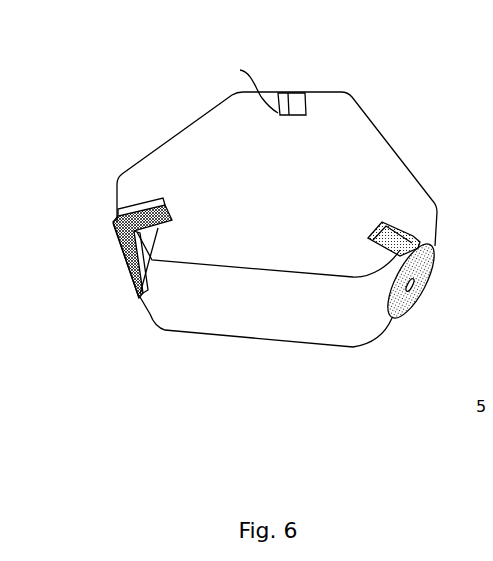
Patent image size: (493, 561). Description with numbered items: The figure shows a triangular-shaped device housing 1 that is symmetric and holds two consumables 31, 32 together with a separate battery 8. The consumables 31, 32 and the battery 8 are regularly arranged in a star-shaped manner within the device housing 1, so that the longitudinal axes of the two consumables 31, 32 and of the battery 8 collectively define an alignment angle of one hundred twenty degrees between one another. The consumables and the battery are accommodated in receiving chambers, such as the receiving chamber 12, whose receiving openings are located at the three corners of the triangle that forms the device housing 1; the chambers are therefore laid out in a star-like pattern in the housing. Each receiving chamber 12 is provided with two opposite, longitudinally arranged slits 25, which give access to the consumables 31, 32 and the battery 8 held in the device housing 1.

The device housing 1 is at (355, 152).
The battery 8 is at (118, 266).
The receiving chamber 12 is at (117, 218).
The slit 25 is at (240, 70).
The consumable 31 is at (433, 252).
The consumable 32 is at (292, 93).